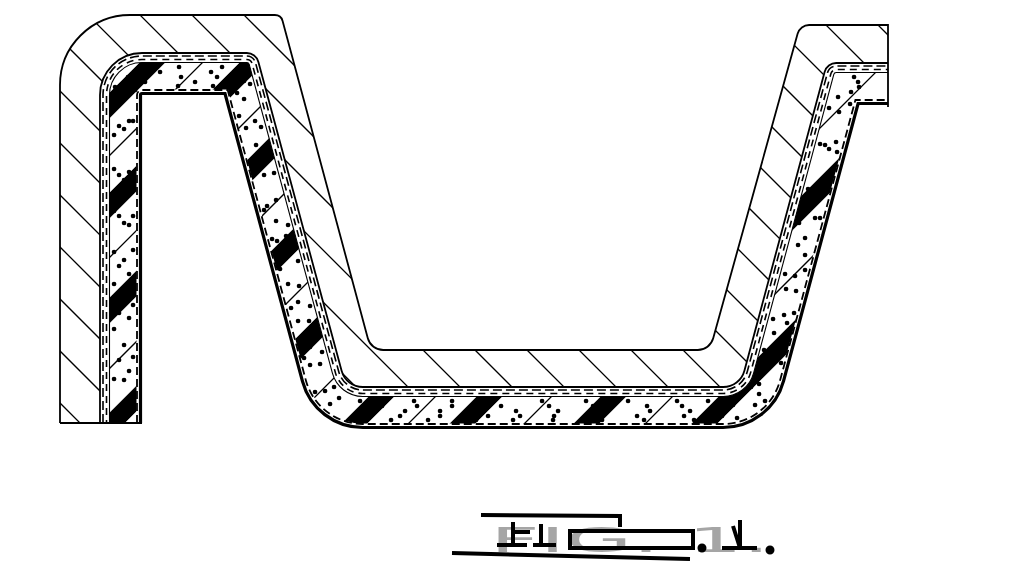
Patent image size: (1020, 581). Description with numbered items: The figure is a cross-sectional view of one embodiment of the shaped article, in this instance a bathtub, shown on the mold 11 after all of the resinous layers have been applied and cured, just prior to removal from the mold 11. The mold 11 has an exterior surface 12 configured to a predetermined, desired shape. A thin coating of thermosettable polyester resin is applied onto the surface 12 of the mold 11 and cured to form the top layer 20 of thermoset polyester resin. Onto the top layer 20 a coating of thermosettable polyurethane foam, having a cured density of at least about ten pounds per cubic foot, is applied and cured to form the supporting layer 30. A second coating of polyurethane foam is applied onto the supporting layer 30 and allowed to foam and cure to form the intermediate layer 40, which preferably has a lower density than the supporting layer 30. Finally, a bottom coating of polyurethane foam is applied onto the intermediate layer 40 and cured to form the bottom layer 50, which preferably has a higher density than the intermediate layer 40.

The mold 11 is at (293, 104).
The exterior surface 12 is at (280, 227).
The top layer 20 is at (307, 270).
The supporting layer 30 is at (433, 390).
The intermediate layer 40 is at (577, 397).
The bottom layer 50 is at (400, 428).